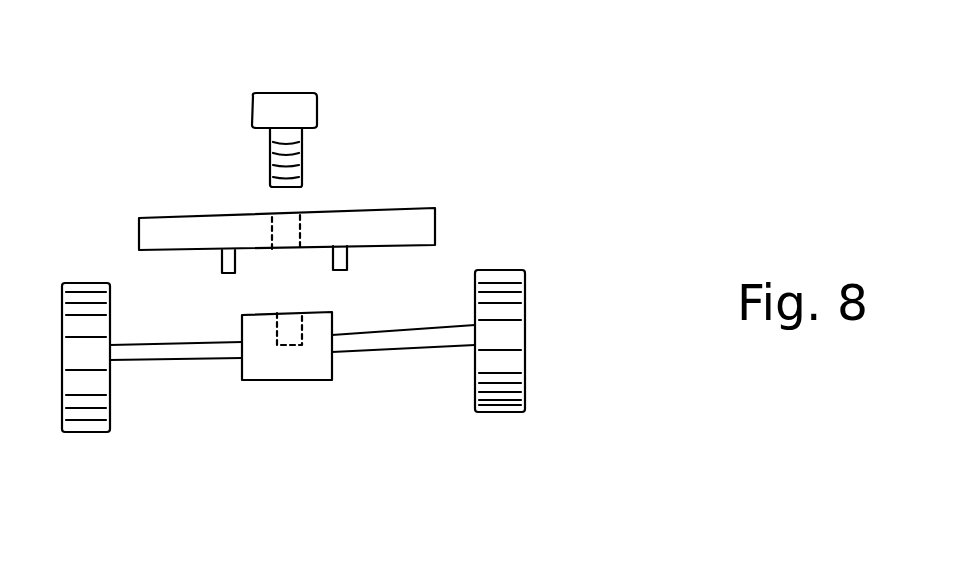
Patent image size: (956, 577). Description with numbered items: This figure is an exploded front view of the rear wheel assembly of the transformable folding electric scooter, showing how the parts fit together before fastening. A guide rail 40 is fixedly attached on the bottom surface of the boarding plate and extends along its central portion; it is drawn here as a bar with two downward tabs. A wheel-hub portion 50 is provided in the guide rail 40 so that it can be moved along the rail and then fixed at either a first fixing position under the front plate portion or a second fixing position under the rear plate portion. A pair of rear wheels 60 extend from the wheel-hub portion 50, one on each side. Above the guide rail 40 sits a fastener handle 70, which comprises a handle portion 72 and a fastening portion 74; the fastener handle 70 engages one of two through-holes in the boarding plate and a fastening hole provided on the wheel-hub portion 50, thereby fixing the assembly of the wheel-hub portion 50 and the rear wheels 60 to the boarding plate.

The guide rail 40 is at (222, 270).
The wheel-hub portion 50 is at (312, 368).
The rear wheels 60 is at (87, 433).
The fastener handle 70 is at (290, 110).
The handle portion 72 is at (263, 110).
The fastening portion 74 is at (270, 160).